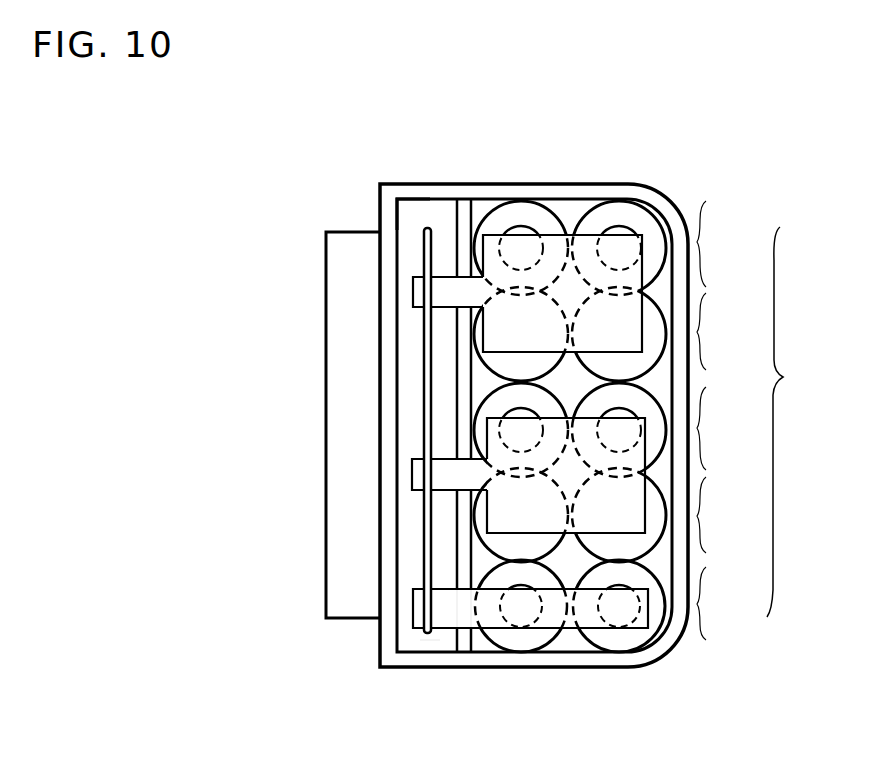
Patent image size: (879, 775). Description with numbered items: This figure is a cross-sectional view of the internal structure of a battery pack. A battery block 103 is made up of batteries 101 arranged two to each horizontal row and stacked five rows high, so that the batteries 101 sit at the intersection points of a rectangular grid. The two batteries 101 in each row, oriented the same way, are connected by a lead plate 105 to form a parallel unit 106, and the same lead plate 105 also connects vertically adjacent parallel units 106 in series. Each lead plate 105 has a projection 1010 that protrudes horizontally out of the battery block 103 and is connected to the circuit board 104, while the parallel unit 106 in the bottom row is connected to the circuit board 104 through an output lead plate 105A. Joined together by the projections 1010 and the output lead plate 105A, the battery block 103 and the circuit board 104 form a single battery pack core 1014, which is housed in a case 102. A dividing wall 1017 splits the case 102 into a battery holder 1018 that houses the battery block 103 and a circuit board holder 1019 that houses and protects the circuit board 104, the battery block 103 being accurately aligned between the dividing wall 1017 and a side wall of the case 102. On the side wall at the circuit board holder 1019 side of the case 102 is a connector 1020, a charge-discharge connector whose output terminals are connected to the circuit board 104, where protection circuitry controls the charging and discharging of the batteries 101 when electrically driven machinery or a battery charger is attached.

The battery 101 is at (503, 213).
The case 102 is at (548, 184).
The battery block 103 is at (807, 422).
The circuit board 104 is at (425, 370).
The lead plate 105 is at (613, 240).
The output lead plate 105A is at (465, 615).
The parallel unit 106 is at (731, 420).
The projection 1010 is at (437, 285).
The battery pack core 1014 is at (404, 203).
The dividing wall 1017 is at (464, 540).
The battery holder 1018 is at (570, 658).
The circuit board holder 1019 is at (425, 655).
The connector 1020 is at (336, 620).